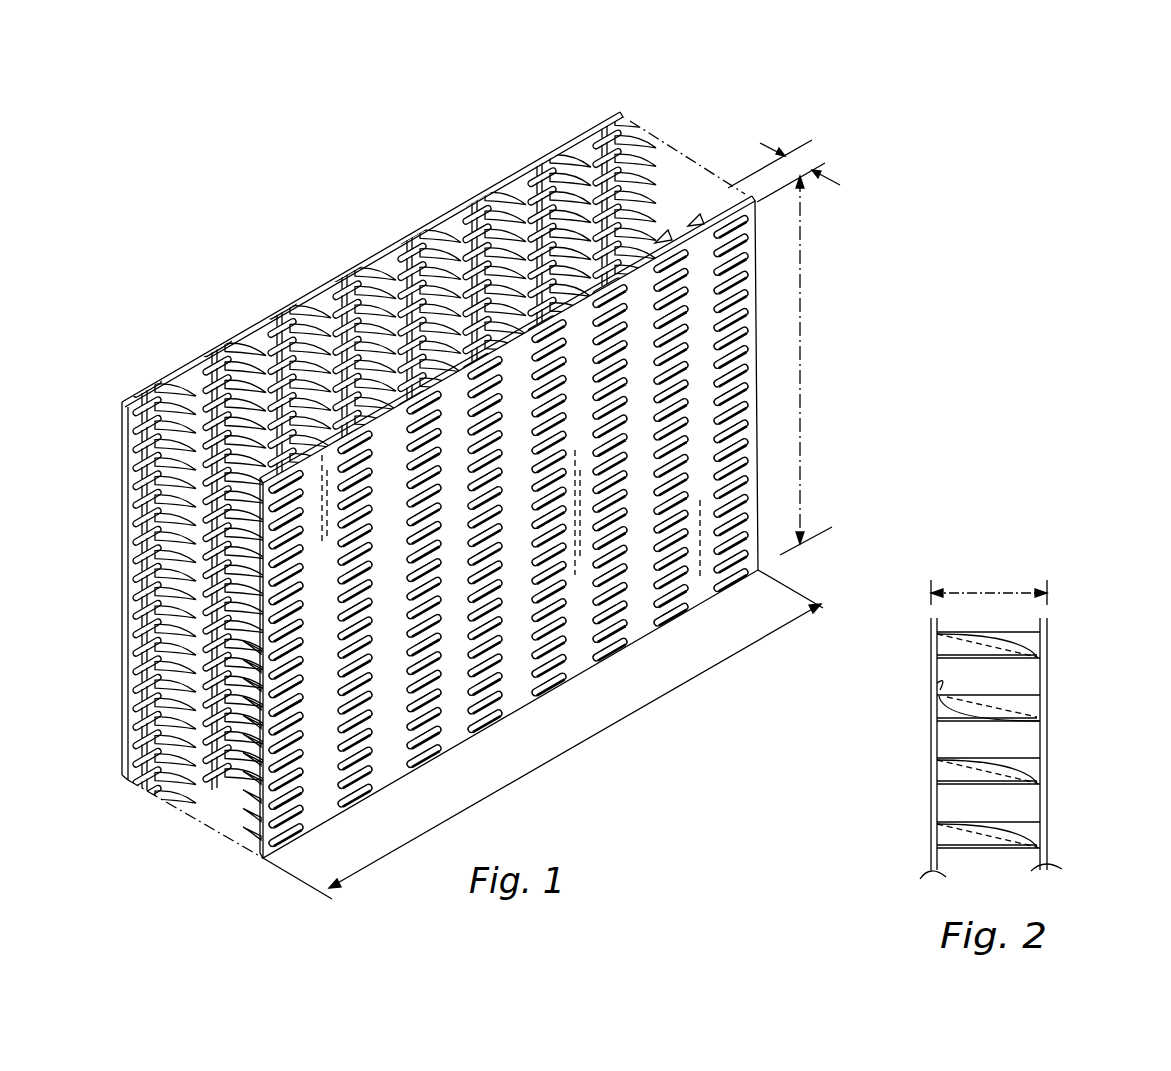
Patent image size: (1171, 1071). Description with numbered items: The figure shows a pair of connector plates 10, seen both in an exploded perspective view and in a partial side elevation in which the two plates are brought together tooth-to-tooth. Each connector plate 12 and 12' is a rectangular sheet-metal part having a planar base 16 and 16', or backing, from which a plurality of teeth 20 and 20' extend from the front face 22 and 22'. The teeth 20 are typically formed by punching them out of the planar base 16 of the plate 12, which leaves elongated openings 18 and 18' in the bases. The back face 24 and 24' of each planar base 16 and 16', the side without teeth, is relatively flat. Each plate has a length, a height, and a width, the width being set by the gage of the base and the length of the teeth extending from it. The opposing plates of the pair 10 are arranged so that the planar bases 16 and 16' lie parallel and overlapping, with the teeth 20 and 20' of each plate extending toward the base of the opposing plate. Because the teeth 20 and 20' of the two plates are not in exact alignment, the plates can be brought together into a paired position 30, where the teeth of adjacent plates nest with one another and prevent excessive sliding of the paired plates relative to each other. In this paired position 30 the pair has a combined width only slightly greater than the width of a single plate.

In FIG. 1, the pair of connector plates 10 is at (266, 177).
In FIG. 2, the pair of connector plates 10 is at (1090, 581).
In FIG. 1, the connector plate 12 is at (557, 527).
In FIG. 2, the connector plate 12 is at (1078, 744).
In FIG. 1, the connector plate 12' is at (372, 259).
In FIG. 2, the connector plate 12' is at (897, 744).
In FIG. 1, the planar base 16 is at (757, 421).
In FIG. 2, the planar base 16 is at (1025, 651).
In FIG. 1, the planar base 16' is at (353, 472).
In FIG. 2, the planar base 16' is at (948, 782).
In FIG. 1, the elongated openings 18 is at (503, 645).
In FIG. 1, the elongated openings 18' is at (362, 489).
In FIG. 1, the teeth 20 is at (694, 173).
In FIG. 2, the teeth 20 is at (1023, 712).
In FIG. 1, the teeth 20' is at (643, 310).
In FIG. 2, the teeth 20' is at (950, 655).
In FIG. 2, the front face 22 is at (1023, 826).
In FIG. 1, the front face 22' is at (100, 591).
In FIG. 2, the front face 22' is at (900, 699).
In FIG. 1, the back face 24 is at (491, 566).
In FIG. 2, the back face 24 is at (1022, 780).
In FIG. 2, the back face 24' is at (948, 721).
In FIG. 2, the paired position 30 is at (1070, 626).